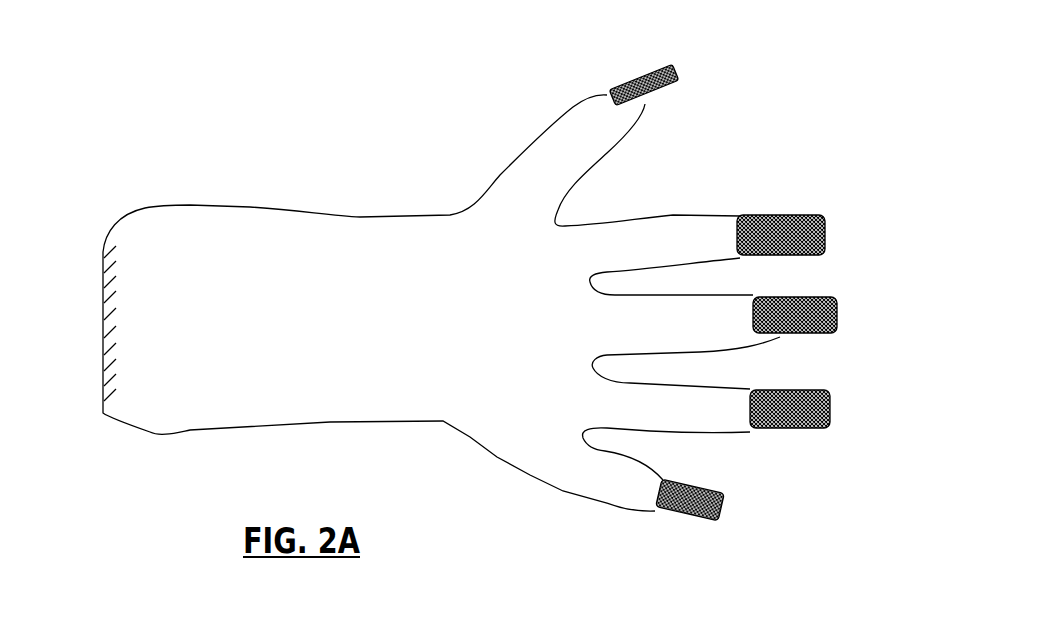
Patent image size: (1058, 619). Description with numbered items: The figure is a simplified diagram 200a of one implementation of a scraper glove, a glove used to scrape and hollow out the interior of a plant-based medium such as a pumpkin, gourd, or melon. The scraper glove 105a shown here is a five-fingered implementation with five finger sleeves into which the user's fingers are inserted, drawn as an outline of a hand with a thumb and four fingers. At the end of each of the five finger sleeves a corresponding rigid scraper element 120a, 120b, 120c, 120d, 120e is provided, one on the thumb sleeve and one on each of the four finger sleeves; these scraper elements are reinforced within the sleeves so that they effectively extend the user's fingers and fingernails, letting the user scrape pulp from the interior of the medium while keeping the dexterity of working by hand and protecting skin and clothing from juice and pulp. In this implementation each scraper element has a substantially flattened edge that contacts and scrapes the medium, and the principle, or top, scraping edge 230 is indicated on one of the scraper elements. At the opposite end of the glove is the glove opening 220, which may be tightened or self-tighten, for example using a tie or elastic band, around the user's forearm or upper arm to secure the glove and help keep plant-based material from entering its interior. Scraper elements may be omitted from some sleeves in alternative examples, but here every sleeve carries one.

The diagram 200a is at (108, 110).
The scraper glove 105a is at (336, 170).
The glove opening 220 is at (82, 328).
The scraper element 120a is at (700, 52).
The scraper element 120b is at (845, 210).
The scraper element 120c is at (858, 290).
The scraper element 120d is at (858, 382).
The scraper element 120e is at (750, 518).
The top scraping edge 230 is at (830, 415).